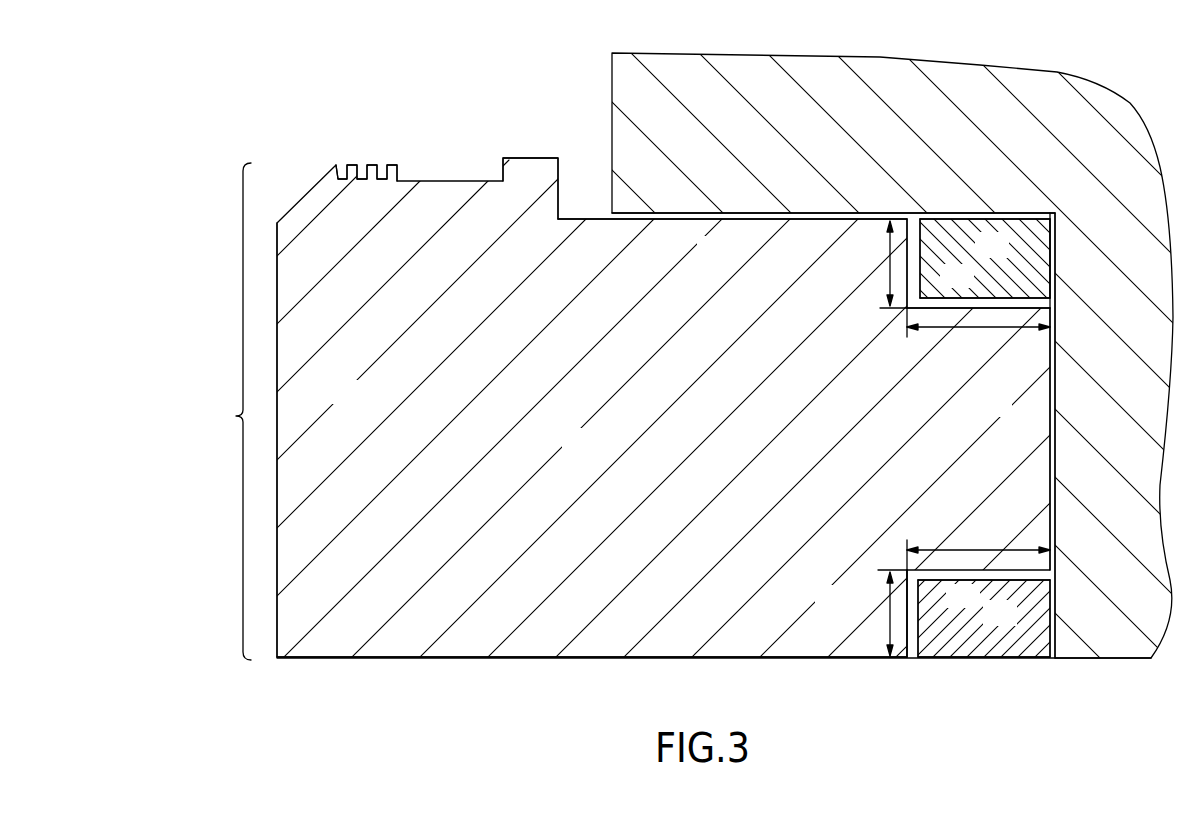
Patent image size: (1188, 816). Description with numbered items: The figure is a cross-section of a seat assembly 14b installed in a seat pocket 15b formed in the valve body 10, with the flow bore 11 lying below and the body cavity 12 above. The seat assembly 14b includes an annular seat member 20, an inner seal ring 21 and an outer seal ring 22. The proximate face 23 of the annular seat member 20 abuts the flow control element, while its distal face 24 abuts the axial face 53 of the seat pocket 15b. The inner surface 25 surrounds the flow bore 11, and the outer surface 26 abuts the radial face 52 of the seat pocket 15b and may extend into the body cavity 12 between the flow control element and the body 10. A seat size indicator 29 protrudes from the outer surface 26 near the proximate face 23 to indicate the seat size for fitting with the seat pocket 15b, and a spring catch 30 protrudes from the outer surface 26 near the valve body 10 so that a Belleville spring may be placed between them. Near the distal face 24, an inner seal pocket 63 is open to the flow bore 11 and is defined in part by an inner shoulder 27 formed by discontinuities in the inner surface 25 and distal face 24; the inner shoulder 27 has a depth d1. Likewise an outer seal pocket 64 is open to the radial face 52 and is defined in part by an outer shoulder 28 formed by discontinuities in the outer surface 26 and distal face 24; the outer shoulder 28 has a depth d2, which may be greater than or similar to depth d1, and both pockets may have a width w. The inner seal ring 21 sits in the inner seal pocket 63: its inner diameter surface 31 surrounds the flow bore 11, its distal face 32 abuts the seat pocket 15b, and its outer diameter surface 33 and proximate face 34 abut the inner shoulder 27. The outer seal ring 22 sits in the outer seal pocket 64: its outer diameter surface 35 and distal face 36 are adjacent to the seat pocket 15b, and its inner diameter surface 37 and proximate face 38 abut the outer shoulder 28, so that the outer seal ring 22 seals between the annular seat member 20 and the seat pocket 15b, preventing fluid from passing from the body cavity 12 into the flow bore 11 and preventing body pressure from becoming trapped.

The valve body 10 is at (1043, 103).
The flow bore 11 is at (670, 658).
The body cavity 12 is at (557, 112).
The seat assembly 14b is at (237, 416).
The seat pocket 15b is at (1049, 198).
The annular seat member 20 is at (594, 456).
The inner seal ring 21 is at (987, 625).
The outer seal ring 22 is at (979, 257).
The proximate face 23 is at (278, 385).
The distal face 24 is at (1048, 380).
The inner surface 25 is at (592, 653).
The outer surface 26 is at (752, 225).
The inner shoulder 27 is at (905, 568).
The outer shoulder 28 is at (905, 310).
The seat size indicator 29 is at (347, 163).
The spring catch 30 is at (520, 157).
The inner diameter surface 31 is at (1010, 660).
The distal face 32 is at (1058, 618).
The outer diameter surface 33 is at (1040, 575).
The proximate face 34 is at (922, 620).
The outer diameter surface 35 is at (977, 211).
The distal face 36 is at (1058, 247).
The inner diameter surface 37 is at (1058, 306).
The proximate face 38 is at (927, 255).
The radial face 52 is at (793, 210).
The axial face 53 is at (1058, 410).
The inner seal pocket 63 is at (913, 660).
The outer seal pocket 64 is at (919, 218).
The depth d1 is at (887, 615).
The depth d2 is at (890, 270).
The width w is at (985, 331).